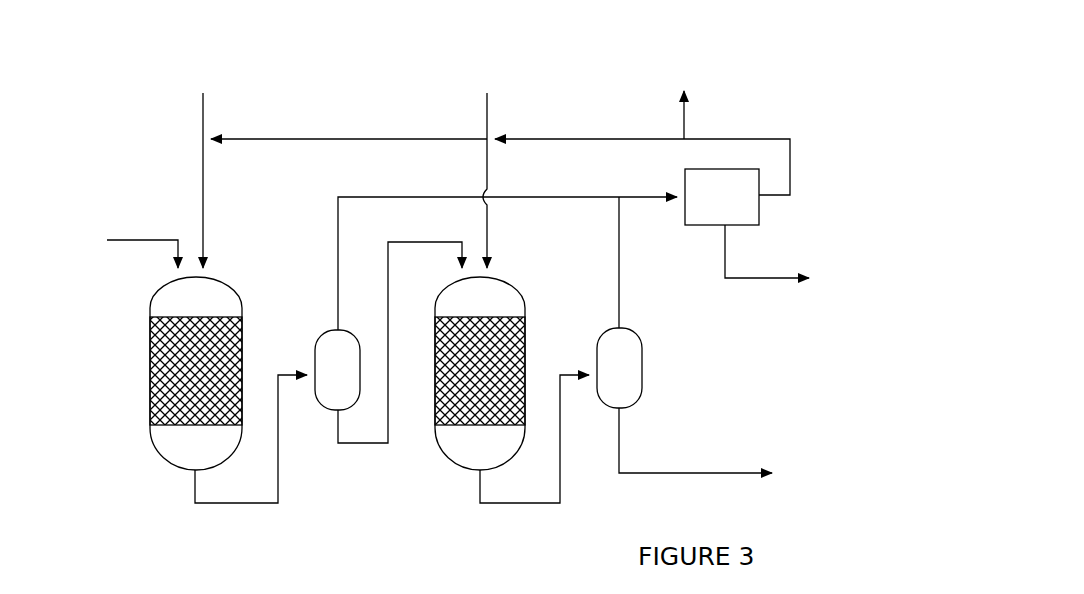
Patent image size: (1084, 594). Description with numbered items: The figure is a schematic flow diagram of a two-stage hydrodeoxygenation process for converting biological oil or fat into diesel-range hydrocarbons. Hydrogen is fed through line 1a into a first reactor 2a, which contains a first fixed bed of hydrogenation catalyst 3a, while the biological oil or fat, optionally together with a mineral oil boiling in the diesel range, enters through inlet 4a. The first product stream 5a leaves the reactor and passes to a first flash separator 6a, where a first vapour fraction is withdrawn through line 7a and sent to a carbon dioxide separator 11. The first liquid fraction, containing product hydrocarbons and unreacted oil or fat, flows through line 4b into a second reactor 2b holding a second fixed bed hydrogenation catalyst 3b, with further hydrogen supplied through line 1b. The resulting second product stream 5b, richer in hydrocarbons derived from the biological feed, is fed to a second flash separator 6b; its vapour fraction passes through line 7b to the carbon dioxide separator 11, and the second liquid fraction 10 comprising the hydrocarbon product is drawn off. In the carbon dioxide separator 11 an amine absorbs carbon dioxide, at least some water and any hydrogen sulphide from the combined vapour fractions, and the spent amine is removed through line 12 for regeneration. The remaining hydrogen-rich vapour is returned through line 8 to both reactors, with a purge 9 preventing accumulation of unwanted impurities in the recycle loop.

The hydrogen feed line to first reactor 1a is at (210, 163).
The hydrogen feed line to second reactor 1b is at (499, 163).
The first reactor 2a is at (140, 309).
The second reactor 2b is at (520, 278).
The first fixed bed of hydrogenation catalyst 3a is at (170, 367).
The second fixed bed hydrogenation catalyst 3b is at (510, 359).
The biological oil or fat feed line 4a is at (124, 246).
The first liquid fraction line 4b is at (400, 358).
The first product stream 5a is at (251, 454).
The second product stream 5b is at (534, 454).
The first flash separator 6a is at (337, 370).
The second flash separator 6b is at (619, 368).
The first vapour fraction line 7a is at (507, 249).
The second vapour fraction line 7b is at (636, 262).
The hydrogen recycle line 8 is at (500, 152).
The purge 9 is at (685, 94).
The second liquid fraction 10 is at (719, 448).
The carbon dioxide separator 11 is at (722, 197).
The amine removal line 12 is at (791, 259).